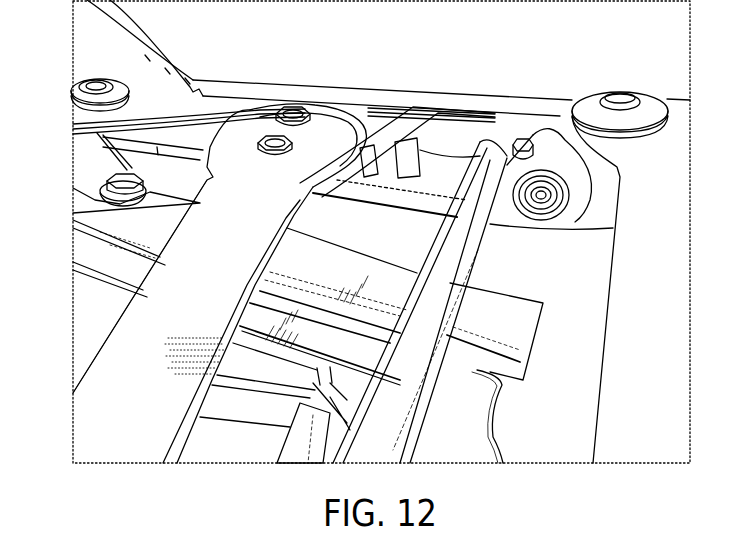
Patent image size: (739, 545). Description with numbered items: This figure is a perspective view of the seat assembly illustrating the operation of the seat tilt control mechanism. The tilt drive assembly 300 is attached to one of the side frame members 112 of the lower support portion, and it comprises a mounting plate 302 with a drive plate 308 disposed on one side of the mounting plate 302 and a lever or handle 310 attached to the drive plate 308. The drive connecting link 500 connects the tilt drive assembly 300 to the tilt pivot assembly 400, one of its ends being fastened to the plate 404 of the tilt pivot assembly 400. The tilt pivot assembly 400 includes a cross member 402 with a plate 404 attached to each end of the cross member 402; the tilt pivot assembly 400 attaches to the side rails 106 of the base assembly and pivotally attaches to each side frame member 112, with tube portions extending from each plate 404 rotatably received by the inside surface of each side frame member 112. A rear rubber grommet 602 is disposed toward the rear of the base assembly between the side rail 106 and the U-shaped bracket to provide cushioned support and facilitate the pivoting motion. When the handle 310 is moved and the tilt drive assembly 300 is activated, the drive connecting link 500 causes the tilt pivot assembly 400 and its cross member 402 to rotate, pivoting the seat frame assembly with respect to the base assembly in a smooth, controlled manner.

The tilt drive assembly 300 is at (268, 62).
The drive plate 308 is at (220, 132).
The side frame member 112 is at (333, 94).
The mounting plate 302 is at (377, 123).
The drive connecting link 500 is at (437, 137).
The tilt pivot assembly 400 is at (579, 243).
The plate 404 is at (545, 140).
The rear rubber grommet 602 is at (100, 188).
The handle 310 is at (125, 348).
The cross member 402 is at (468, 226).
The side rail 106 is at (513, 307).